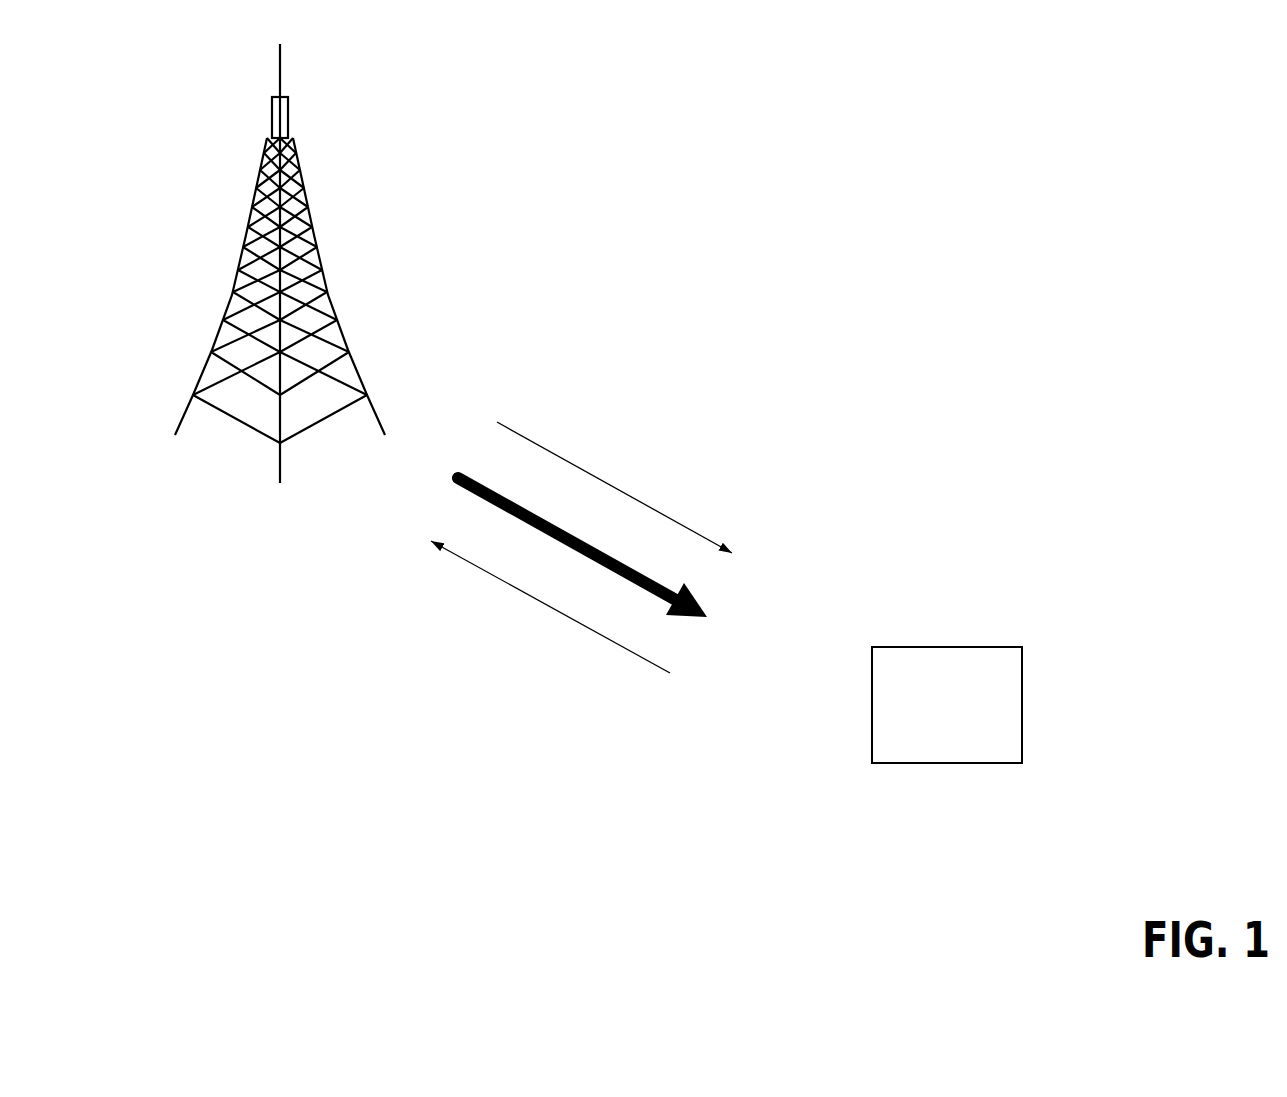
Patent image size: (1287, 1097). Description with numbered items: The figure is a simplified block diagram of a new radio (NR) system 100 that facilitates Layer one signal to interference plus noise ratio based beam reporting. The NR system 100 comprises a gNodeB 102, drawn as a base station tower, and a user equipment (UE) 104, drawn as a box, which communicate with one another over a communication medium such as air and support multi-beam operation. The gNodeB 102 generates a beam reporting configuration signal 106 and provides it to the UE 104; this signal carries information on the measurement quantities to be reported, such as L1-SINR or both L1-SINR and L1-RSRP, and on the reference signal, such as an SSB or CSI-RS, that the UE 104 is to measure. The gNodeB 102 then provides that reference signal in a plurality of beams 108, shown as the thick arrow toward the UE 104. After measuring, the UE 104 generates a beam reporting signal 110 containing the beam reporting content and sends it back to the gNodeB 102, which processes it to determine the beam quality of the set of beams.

The new radio (NR) system 100 is at (856, 119).
The gNodeB 102 is at (243, 230).
The user equipment (UE) 104 is at (947, 770).
The beam reporting configuration signal 106 is at (633, 467).
The plurality of beams 108 is at (710, 632).
The beam reporting signal 110 is at (500, 608).